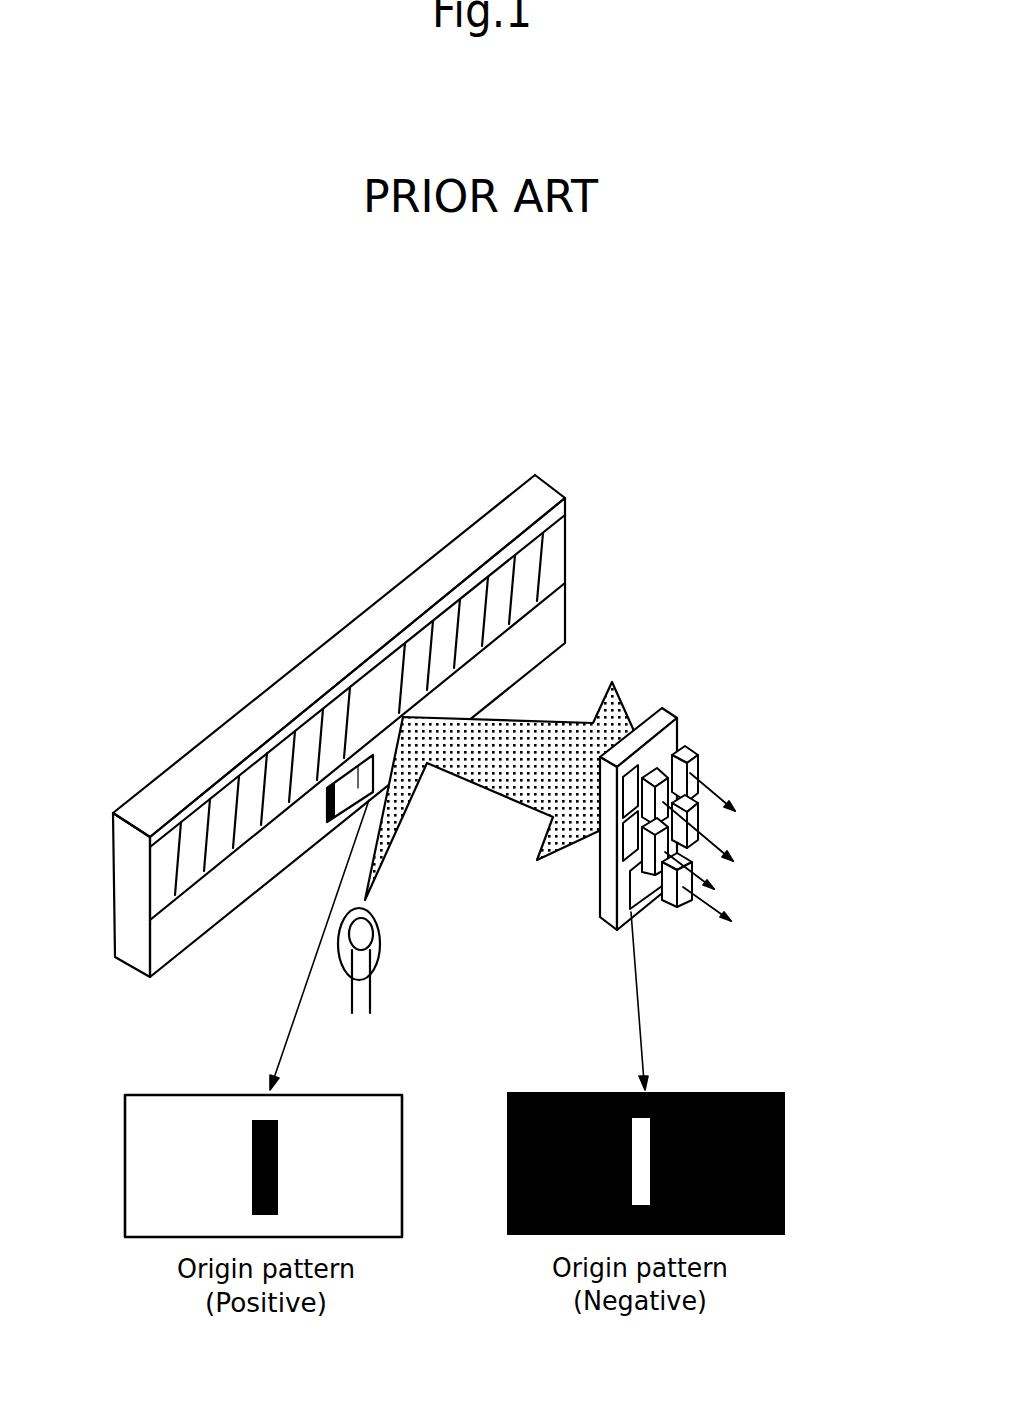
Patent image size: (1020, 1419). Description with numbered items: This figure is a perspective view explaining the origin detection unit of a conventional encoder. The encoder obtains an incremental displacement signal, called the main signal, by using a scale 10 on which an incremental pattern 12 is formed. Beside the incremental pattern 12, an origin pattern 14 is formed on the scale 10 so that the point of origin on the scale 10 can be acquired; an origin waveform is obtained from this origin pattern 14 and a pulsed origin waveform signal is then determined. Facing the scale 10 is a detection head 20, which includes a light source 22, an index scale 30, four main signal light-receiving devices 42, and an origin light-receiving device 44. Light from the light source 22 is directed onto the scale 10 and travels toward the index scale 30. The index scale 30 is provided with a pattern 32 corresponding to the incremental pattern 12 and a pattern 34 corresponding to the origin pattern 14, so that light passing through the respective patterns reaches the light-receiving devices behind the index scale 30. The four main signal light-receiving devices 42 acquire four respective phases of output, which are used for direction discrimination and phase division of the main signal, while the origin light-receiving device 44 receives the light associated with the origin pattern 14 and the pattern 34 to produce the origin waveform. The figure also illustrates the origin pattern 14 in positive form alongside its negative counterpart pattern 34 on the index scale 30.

The scale 10 is at (463, 538).
The incremental pattern 12 is at (567, 537).
The origin pattern 14 is at (327, 818).
The detection head 20 is at (725, 804).
The light source 22 is at (381, 945).
The index scale 30 is at (653, 718).
The pattern 32 is at (677, 740).
The pattern 34 is at (747, 1062).
The main signal light-receiving devices 42 is at (703, 767).
The origin light-receiving device 44 is at (680, 907).